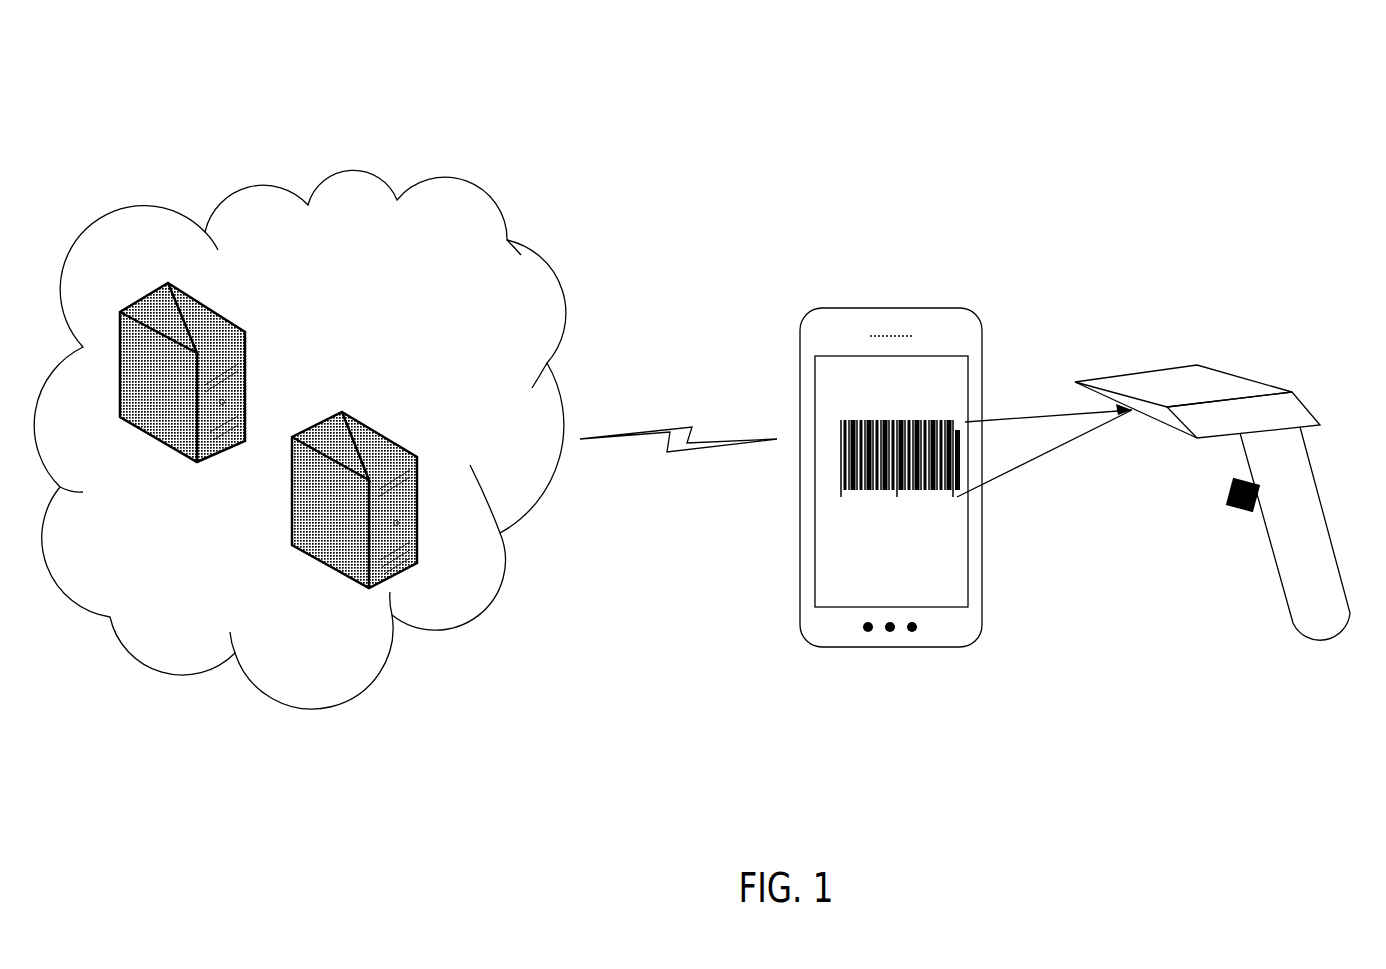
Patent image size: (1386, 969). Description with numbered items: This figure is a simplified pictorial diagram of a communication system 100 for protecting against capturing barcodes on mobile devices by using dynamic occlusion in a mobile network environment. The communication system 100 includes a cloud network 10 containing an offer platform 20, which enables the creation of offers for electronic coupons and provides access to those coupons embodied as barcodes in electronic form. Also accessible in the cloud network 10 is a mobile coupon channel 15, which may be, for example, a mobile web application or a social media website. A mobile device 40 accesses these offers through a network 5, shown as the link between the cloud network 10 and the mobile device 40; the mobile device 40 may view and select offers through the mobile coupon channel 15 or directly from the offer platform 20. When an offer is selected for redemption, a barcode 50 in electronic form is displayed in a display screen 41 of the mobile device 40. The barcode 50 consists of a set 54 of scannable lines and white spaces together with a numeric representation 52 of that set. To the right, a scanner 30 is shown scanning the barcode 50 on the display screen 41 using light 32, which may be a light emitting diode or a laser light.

The communication system 100 is at (938, 84).
The cloud network 10 is at (348, 284).
The offer platform 20 is at (245, 345).
The mobile coupon channel 15 is at (417, 485).
The network 5 is at (680, 418).
The mobile device 40 is at (896, 300).
The display screen 41 is at (965, 548).
The barcode 50 is at (859, 472).
The set of scannable lines and white spaces 54 is at (958, 411).
The numeric representation 52 is at (820, 490).
The light 32 is at (1040, 456).
The scanner 30 is at (1310, 460).